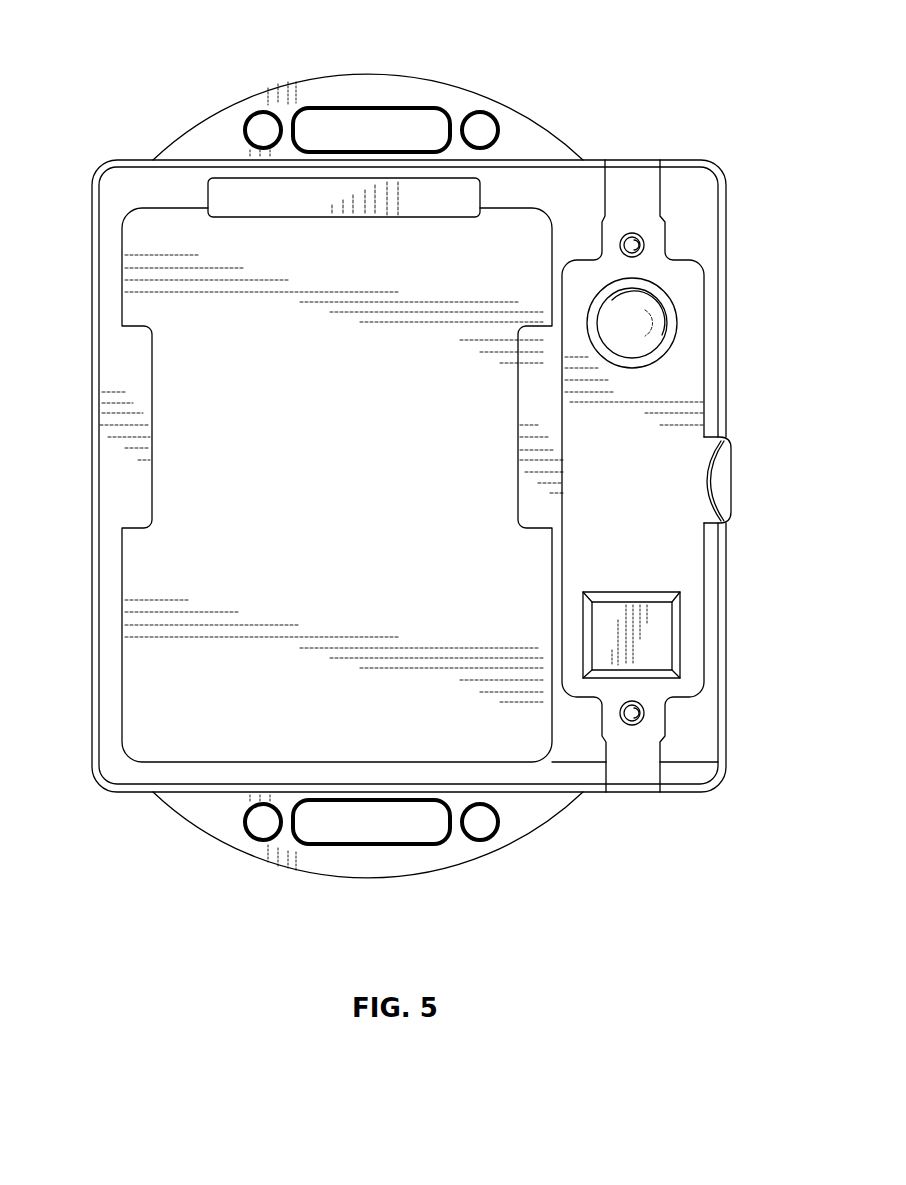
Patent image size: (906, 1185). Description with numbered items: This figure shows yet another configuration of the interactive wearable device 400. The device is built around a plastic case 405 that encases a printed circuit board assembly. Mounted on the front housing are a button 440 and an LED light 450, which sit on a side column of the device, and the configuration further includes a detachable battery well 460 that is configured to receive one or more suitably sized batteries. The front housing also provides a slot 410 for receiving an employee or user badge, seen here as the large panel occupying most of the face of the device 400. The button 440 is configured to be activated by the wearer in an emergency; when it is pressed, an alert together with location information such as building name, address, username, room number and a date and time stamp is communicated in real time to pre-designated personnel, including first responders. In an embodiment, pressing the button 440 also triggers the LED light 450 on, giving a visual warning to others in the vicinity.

The interactive wearable device 400 is at (166, 48).
The plastic case 405 is at (90, 660).
The slot 410 is at (507, 720).
The mounted button 440 is at (667, 327).
The LED light 450 is at (660, 637).
The detachable battery well 460 is at (633, 175).